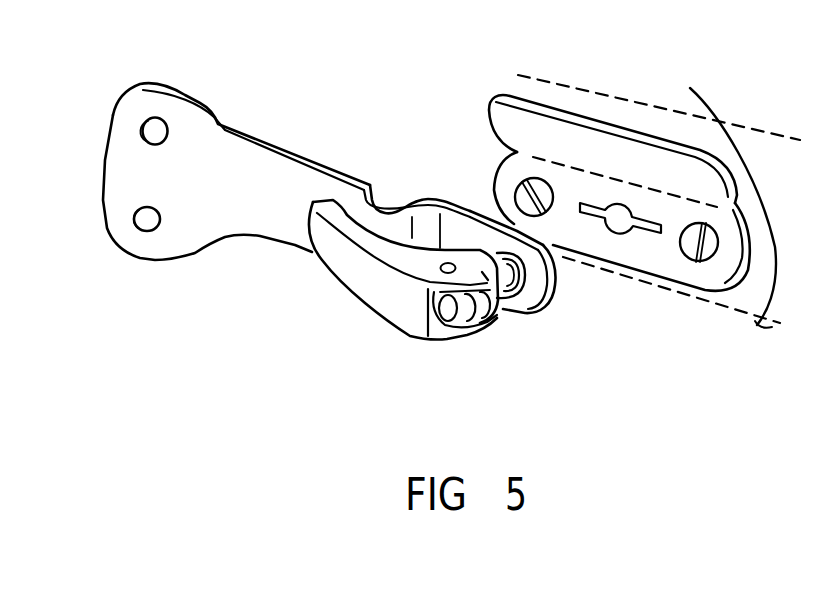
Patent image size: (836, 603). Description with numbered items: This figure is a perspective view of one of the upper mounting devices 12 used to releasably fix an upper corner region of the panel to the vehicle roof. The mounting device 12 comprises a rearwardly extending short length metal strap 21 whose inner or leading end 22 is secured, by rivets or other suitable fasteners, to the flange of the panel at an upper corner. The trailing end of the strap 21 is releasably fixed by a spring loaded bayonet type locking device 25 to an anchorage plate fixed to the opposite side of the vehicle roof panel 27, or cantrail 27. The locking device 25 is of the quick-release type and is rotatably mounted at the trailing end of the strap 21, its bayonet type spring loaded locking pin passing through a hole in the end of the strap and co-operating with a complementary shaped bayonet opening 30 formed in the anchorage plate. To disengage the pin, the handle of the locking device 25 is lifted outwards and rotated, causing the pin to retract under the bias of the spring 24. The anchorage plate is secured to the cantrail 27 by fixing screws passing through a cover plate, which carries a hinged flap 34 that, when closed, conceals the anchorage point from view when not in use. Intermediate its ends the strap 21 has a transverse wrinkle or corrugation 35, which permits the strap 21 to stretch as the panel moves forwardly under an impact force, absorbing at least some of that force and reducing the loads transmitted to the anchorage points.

The mounting device 12 is at (351, 308).
The metal strap 21 is at (240, 173).
The leading end 22 is at (130, 163).
The spring 24 is at (537, 306).
The spring loaded bayonet type locking device 25 is at (487, 339).
The vehicle roof panel 27 is at (733, 170).
The bayonet opening 30 is at (622, 226).
The hinged flap 34 is at (557, 137).
The transverse wrinkle or corrugation 35 is at (389, 212).